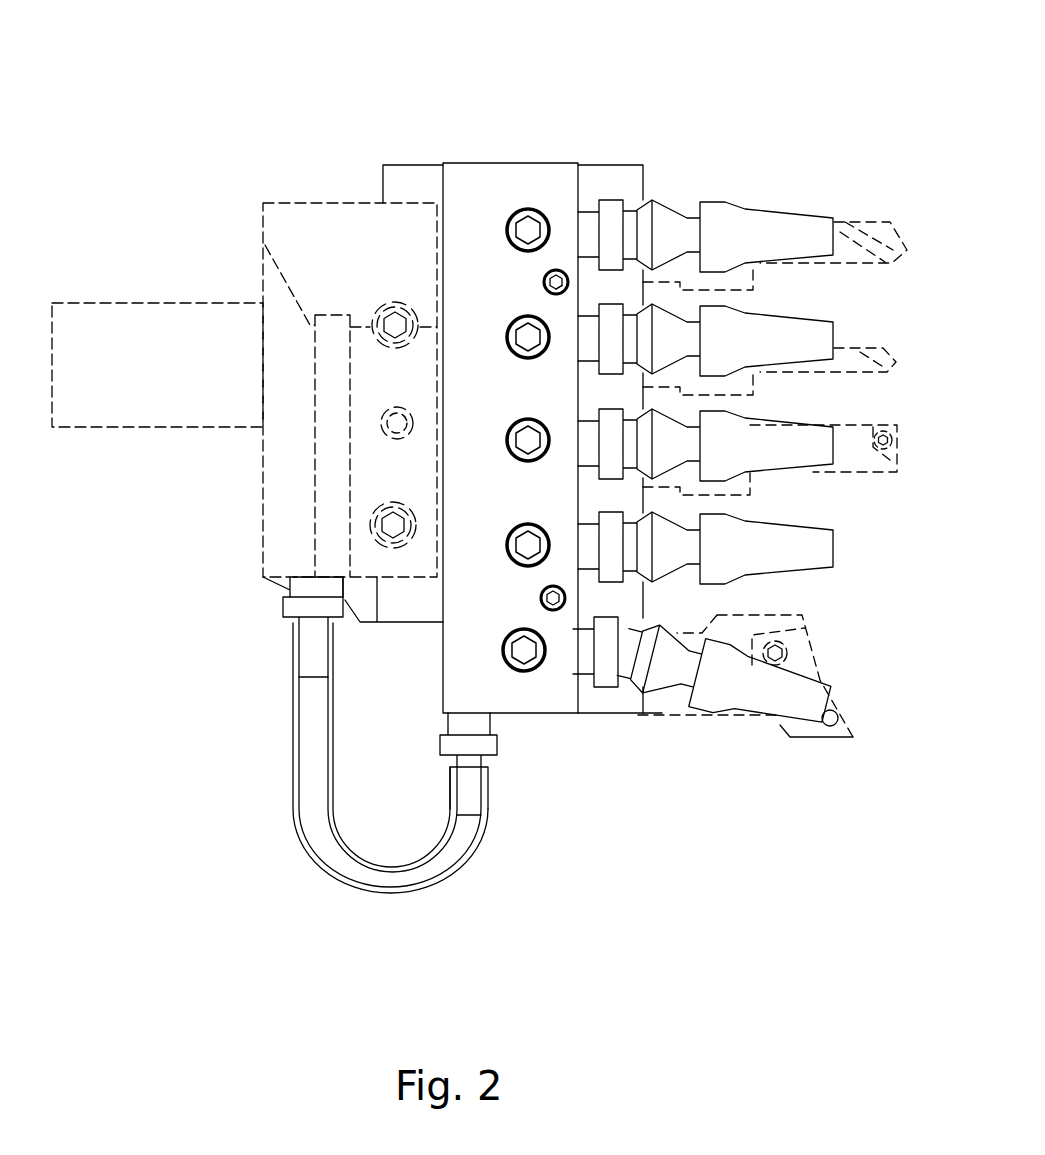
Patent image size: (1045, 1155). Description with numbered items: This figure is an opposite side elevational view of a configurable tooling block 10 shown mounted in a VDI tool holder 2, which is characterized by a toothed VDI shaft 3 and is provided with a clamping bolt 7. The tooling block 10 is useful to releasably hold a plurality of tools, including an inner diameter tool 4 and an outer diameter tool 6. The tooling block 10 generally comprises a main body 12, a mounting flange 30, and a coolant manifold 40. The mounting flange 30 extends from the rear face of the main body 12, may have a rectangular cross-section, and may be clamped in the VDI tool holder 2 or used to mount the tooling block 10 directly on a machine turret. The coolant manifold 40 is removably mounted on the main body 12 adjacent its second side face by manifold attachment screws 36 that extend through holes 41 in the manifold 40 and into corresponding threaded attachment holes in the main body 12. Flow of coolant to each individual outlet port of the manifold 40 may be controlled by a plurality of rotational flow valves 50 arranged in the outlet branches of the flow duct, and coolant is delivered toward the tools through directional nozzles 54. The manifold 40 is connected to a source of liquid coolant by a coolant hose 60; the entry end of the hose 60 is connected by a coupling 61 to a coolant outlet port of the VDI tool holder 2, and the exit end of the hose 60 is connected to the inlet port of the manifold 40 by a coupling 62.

The VDI tool holder 2 is at (263, 473).
The toothed VDI shaft 3 is at (150, 303).
The inner diameter tool 4 is at (863, 227).
The outer diameter tool 6 is at (835, 738).
The clamping bolt of VDI tool holder 7 is at (388, 306).
The tooling block 10 is at (447, 125).
The main body 12 is at (615, 167).
The mounting flange 30 is at (400, 177).
The manifold attachment screws 36 is at (545, 281).
The coolant manifold 40 is at (523, 170).
The through-holes in manifold 41 is at (545, 283).
The rotational flow valves 50 is at (515, 213).
The directional nozzles 54 is at (755, 230).
The coolant hose 60 is at (293, 765).
The coupling 61 is at (283, 608).
The coupling 62 is at (498, 748).